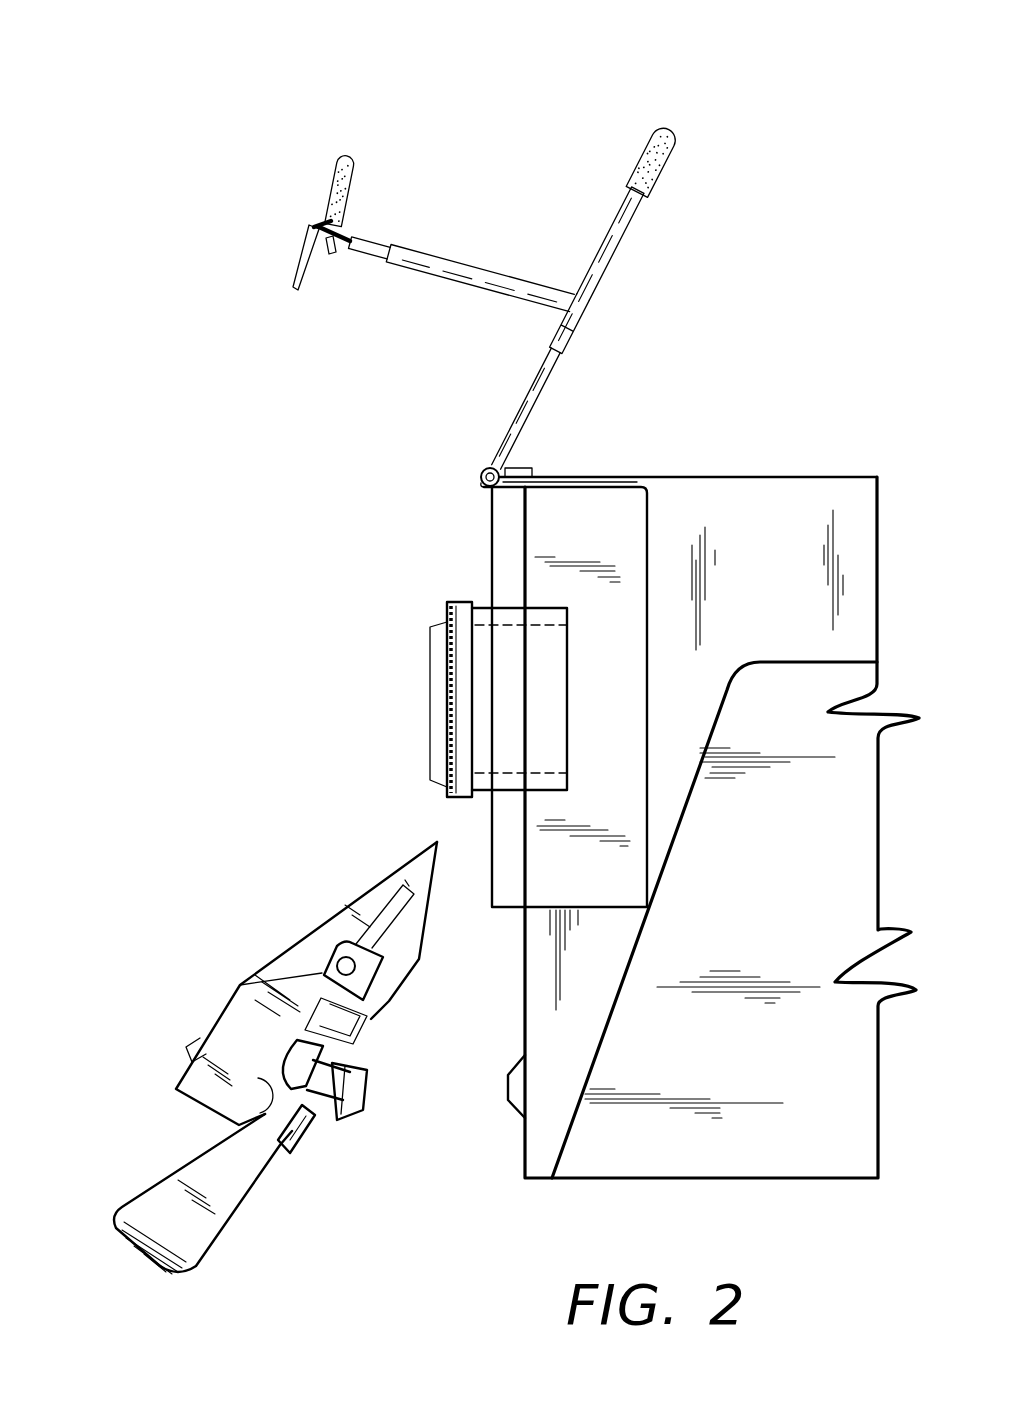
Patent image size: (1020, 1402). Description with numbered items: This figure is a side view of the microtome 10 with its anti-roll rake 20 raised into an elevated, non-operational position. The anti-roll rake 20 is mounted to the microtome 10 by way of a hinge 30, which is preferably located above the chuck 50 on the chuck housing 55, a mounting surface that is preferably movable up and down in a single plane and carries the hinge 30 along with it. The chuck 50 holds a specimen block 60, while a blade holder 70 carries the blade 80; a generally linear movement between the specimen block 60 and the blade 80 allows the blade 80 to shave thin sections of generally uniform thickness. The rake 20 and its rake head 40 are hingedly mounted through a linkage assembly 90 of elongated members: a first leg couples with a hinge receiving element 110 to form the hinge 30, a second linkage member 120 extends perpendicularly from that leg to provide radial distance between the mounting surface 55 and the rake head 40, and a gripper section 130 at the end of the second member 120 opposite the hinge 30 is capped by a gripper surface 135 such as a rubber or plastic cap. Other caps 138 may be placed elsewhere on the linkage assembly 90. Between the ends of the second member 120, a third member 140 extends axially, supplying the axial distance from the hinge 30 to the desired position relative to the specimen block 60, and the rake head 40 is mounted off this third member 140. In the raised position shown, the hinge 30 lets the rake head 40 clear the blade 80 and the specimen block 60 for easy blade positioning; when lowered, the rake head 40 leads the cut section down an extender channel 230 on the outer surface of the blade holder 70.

The microtome 10 is at (177, 397).
The anti-roll rake 20 is at (645, 210).
The hinge 30 is at (510, 466).
The rake head 40 is at (308, 253).
The chuck 50 is at (470, 610).
The chuck housing 55 is at (618, 535).
The specimen block 60 is at (425, 662).
The blade holder 70 is at (420, 935).
The blade 80 is at (435, 838).
The linkage assembly 90 is at (490, 264).
The hinge receiving element 110 is at (484, 468).
The second linkage member 120 is at (596, 296).
The gripper section 130 is at (678, 157).
The gripper surface 135 is at (653, 137).
The cap 138 is at (342, 163).
The third member 140 is at (422, 246).
The extender channel 230 is at (271, 971).